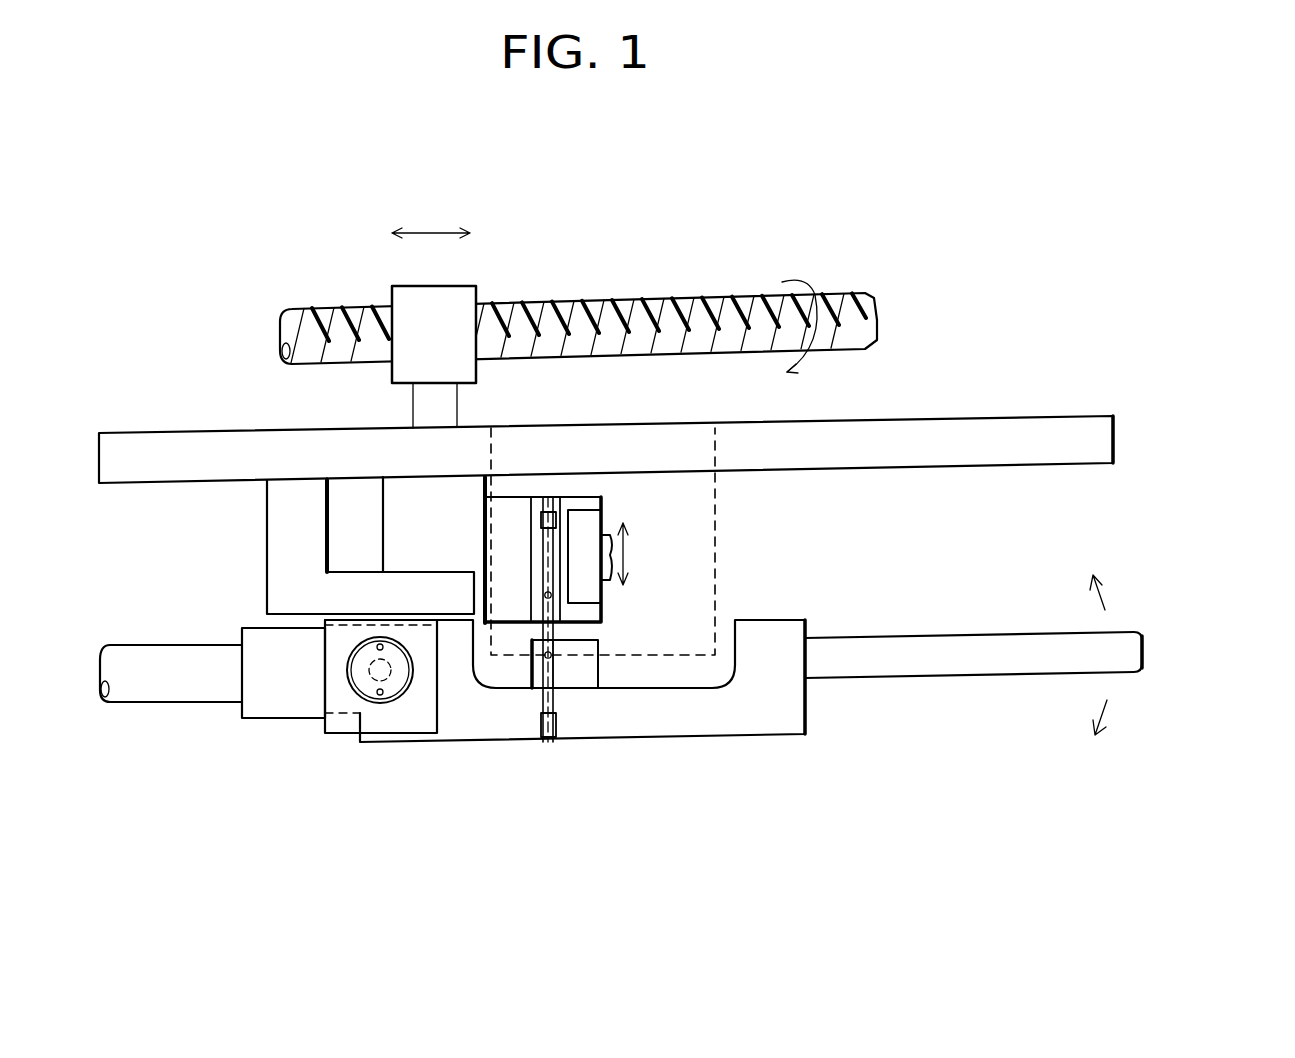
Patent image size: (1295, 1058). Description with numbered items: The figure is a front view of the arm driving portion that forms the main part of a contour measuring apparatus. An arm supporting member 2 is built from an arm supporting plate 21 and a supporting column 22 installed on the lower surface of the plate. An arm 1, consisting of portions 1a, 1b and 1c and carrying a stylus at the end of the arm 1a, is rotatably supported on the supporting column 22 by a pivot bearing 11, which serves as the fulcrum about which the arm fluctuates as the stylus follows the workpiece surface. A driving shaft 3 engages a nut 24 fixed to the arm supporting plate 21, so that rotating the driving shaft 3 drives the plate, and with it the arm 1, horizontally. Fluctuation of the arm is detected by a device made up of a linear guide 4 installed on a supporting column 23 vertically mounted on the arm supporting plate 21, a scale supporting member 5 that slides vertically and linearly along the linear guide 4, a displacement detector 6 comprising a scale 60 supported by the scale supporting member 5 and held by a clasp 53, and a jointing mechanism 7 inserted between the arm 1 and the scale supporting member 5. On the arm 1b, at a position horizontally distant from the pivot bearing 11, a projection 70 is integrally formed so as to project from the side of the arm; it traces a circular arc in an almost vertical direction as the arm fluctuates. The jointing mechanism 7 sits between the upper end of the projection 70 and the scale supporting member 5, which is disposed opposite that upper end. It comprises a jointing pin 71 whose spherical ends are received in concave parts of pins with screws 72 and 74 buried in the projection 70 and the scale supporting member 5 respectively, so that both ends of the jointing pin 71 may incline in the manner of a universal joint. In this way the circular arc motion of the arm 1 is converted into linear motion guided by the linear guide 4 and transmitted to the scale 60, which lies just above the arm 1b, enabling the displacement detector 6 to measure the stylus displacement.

The arm 1 is at (418, 765).
The arm end portion 1a is at (165, 690).
The arm portion 1b is at (746, 718).
The arm portion 1c is at (933, 660).
The arm supporting member 2 is at (133, 403).
The driving shaft 3 is at (716, 305).
The linear guide 4 is at (508, 515).
The scale supporting member 5 is at (593, 503).
The displacement detector 6 is at (716, 543).
The jointing mechanism 7 is at (575, 808).
The pivot bearing 11 is at (363, 675).
The arm supporting plate 21 is at (916, 428).
The supporting column 22 is at (275, 544).
The supporting column 23 is at (400, 533).
The nut 24 is at (460, 300).
The clasp 53 is at (614, 553).
The scale 60 is at (593, 597).
The projection 70 is at (587, 668).
The jointing pin 71 is at (543, 630).
The pin with screw 72 is at (553, 680).
The pin with screw 74 is at (543, 565).